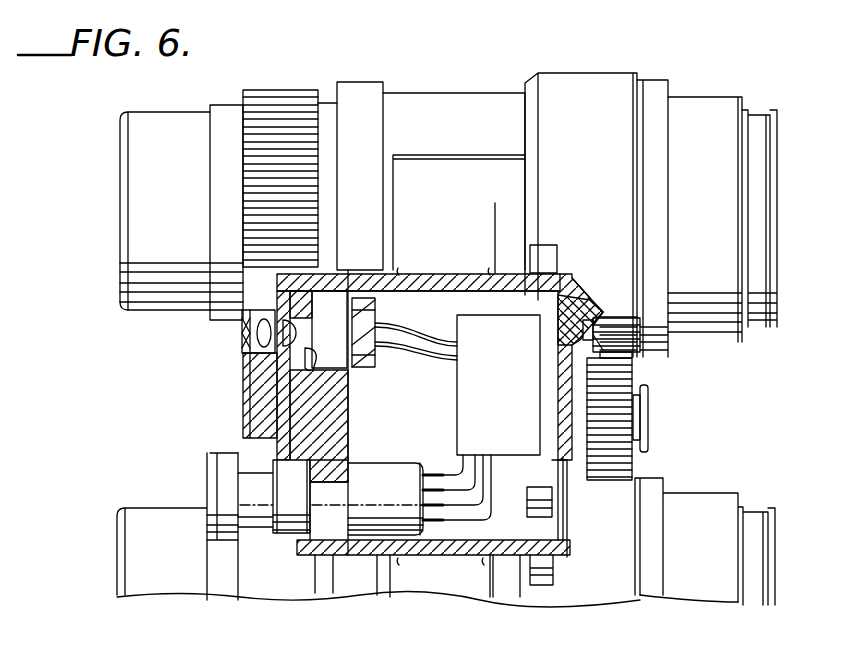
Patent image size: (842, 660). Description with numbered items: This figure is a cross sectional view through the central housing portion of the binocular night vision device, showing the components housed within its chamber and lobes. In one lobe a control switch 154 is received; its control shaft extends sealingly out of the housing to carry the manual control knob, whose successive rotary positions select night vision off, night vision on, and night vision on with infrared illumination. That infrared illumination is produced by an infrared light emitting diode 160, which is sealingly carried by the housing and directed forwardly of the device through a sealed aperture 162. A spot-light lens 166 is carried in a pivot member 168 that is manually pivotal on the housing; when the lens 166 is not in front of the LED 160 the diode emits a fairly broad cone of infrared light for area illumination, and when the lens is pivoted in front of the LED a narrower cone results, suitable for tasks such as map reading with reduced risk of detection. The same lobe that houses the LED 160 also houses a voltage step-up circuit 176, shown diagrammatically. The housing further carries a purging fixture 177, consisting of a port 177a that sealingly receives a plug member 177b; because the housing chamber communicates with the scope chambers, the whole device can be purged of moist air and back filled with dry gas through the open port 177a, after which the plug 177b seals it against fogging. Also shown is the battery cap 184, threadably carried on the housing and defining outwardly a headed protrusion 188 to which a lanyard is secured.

The control switch 154 is at (378, 463).
The infrared light emitting diode 160 is at (376, 308).
The sealed aperture 162 is at (304, 366).
The spot-light lens 166 is at (242, 336).
The pivot member 168 is at (243, 400).
The voltage step-up circuit 176 is at (504, 390).
The purging fixture 177 is at (604, 310).
The port 177a is at (558, 337).
The plug member 177b is at (630, 366).
The battery cap 184 is at (633, 462).
The headed protrusion 188 is at (649, 406).